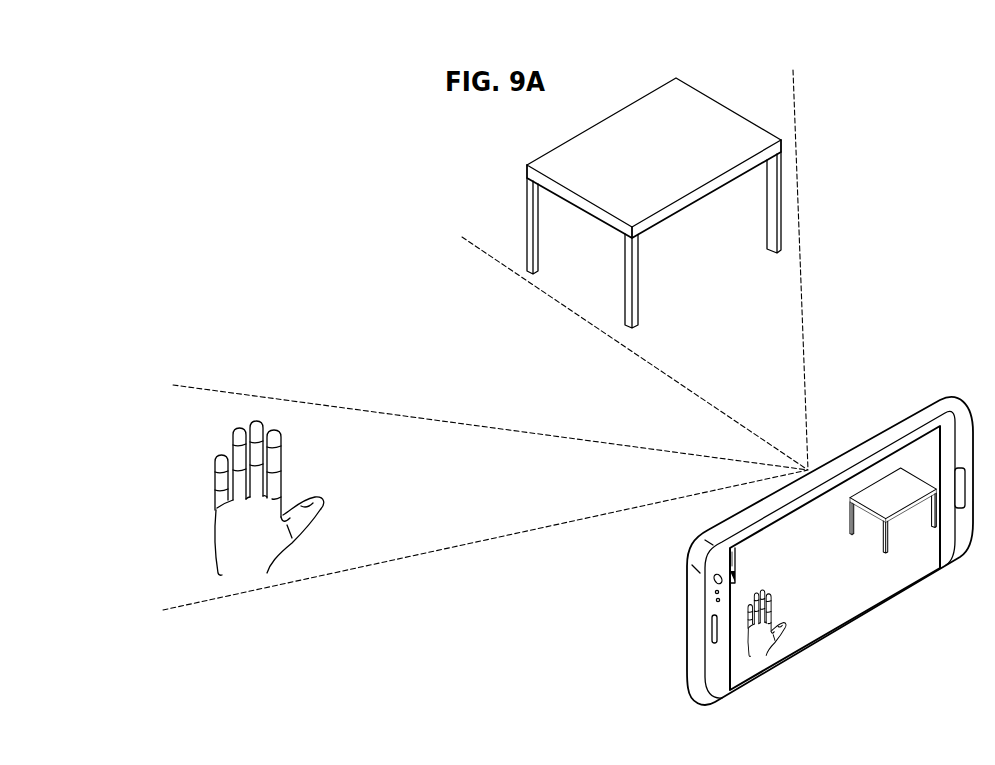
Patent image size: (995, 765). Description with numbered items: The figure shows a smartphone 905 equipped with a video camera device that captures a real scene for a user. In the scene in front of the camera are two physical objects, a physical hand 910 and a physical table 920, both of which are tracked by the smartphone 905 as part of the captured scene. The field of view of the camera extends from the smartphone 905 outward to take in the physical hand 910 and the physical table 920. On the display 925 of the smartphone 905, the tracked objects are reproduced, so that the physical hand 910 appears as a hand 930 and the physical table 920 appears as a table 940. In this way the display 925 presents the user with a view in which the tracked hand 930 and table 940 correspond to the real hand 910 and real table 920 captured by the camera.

The smartphone 905 is at (670, 619).
The physical hand 910 is at (216, 533).
The physical table 920 is at (600, 122).
The display 925 is at (852, 608).
The hand 930 is at (765, 593).
The table 940 is at (902, 513).